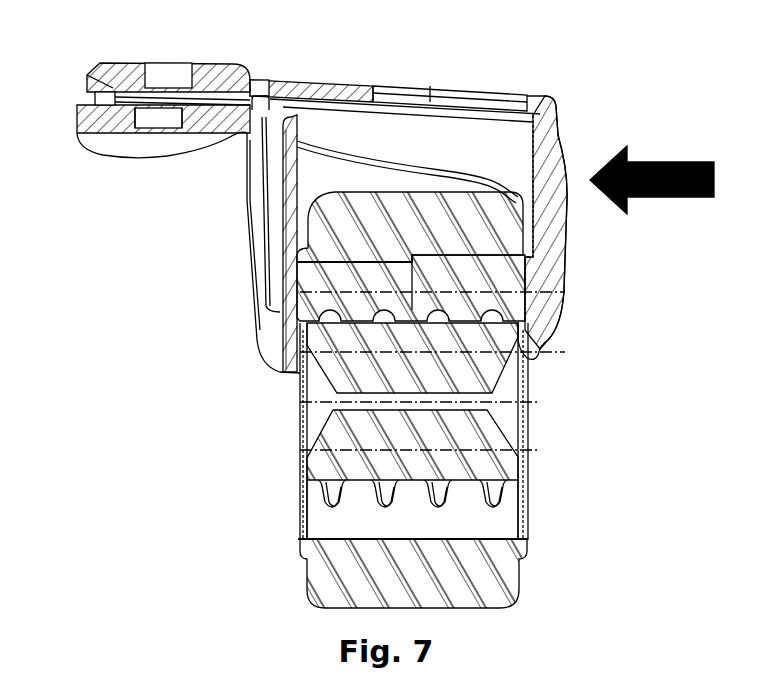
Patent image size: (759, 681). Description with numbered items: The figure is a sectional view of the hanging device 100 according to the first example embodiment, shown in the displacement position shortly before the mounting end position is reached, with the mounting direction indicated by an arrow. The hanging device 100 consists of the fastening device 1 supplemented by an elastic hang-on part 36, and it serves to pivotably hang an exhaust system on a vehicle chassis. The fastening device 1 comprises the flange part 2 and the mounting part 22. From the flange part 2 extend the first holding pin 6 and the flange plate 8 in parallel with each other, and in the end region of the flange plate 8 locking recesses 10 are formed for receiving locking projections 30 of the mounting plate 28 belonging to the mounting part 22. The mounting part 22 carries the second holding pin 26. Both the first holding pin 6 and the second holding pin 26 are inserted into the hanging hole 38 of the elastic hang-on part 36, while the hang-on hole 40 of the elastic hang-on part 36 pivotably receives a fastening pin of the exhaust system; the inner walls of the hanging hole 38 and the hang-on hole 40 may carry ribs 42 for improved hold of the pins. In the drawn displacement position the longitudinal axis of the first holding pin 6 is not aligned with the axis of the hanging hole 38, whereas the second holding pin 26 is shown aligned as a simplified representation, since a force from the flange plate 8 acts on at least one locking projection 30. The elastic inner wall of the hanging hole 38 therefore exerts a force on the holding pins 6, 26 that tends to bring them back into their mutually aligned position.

The hanging device 100 is at (697, 72).
The fastening device 1 is at (593, 243).
The flange part 2 is at (548, 133).
The first holding pin 6 is at (536, 350).
The flange plate 8 is at (318, 87).
The locking recess 10 is at (262, 80).
The mounting part 22 is at (268, 241).
The second holding pin 26 is at (332, 288).
The mounting plate 28 is at (82, 150).
The locking projection 30 is at (113, 131).
The elastic hang-on part 36 is at (345, 563).
The hanging hole 38 is at (364, 268).
The hang-on hole 40 is at (463, 513).
The ribs 42 is at (328, 493).